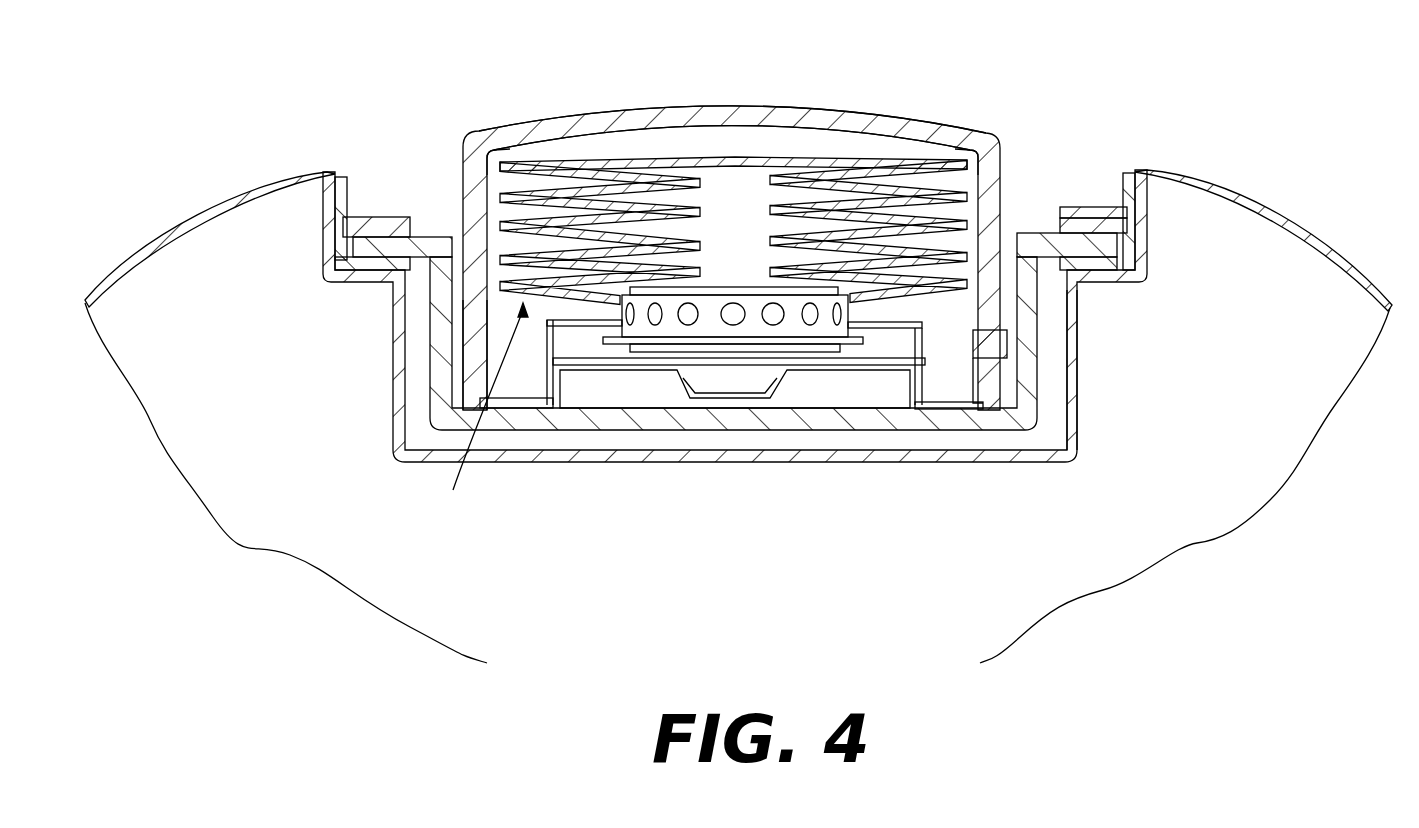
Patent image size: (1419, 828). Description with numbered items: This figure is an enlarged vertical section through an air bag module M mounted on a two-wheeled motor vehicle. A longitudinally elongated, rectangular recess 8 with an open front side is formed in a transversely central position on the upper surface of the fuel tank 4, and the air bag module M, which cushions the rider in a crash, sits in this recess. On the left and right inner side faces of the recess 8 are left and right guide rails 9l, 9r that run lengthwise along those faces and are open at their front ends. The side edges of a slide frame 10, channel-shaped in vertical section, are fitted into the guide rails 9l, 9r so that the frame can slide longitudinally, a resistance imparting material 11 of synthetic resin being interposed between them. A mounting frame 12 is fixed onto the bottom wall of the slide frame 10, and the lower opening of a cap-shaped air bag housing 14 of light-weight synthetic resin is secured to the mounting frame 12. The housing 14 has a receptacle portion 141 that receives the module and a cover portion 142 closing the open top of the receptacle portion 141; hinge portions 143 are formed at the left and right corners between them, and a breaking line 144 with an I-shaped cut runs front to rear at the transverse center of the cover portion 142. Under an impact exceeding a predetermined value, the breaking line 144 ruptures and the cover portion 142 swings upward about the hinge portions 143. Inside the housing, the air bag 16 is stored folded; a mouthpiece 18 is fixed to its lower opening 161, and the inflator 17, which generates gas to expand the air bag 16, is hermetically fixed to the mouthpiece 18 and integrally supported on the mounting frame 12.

The fuel tank 4 is at (1330, 243).
The recess 8 is at (1060, 392).
The left guide rail 9l is at (388, 228).
The right guide rail 9r is at (1100, 223).
The slide frame 10 is at (395, 453).
The resistance imparting material 11 is at (325, 250).
The mounting frame 12 is at (552, 407).
The air bag housing 14 is at (1012, 190).
The receptacle portion 141 is at (470, 320).
The cover portion 142 is at (598, 127).
The hinge portions 143 is at (977, 97).
The breaking line 144 is at (760, 127).
The air bag 16 is at (853, 160).
The lower opening 161 is at (627, 305).
The inflator 17 is at (795, 327).
The mouthpiece 18 is at (660, 293).
The air bag module M is at (484, 416).